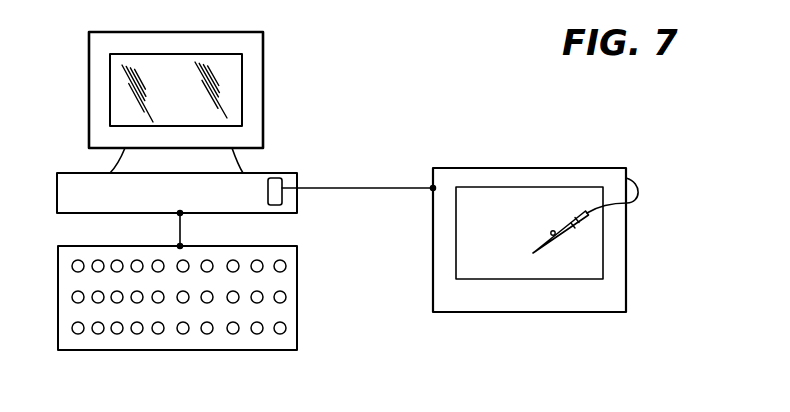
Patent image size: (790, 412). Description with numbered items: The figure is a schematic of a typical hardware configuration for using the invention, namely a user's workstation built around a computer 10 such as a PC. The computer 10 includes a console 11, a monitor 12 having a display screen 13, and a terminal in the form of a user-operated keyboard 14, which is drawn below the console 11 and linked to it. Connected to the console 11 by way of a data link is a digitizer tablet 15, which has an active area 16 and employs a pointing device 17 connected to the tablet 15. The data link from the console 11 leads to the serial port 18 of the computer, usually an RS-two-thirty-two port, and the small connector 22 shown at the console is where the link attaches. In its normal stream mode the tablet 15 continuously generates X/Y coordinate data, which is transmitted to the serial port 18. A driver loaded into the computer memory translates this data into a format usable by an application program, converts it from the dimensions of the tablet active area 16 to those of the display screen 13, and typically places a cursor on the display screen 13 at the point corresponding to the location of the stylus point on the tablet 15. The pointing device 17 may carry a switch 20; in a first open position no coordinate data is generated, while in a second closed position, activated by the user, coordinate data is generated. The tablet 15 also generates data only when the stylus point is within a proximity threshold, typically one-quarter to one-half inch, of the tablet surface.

The computer 10 is at (78, 63).
The console 11 is at (90, 203).
The monitor 12 is at (108, 140).
The display screen 13 is at (242, 95).
The keyboard 14 is at (287, 343).
The digitizer tablet 15 is at (619, 299).
The active area 16 is at (603, 261).
The pointing device 17 is at (580, 225).
The serial port 18 is at (298, 188).
The switch 20 is at (552, 230).
The interface connector 22 is at (277, 177).